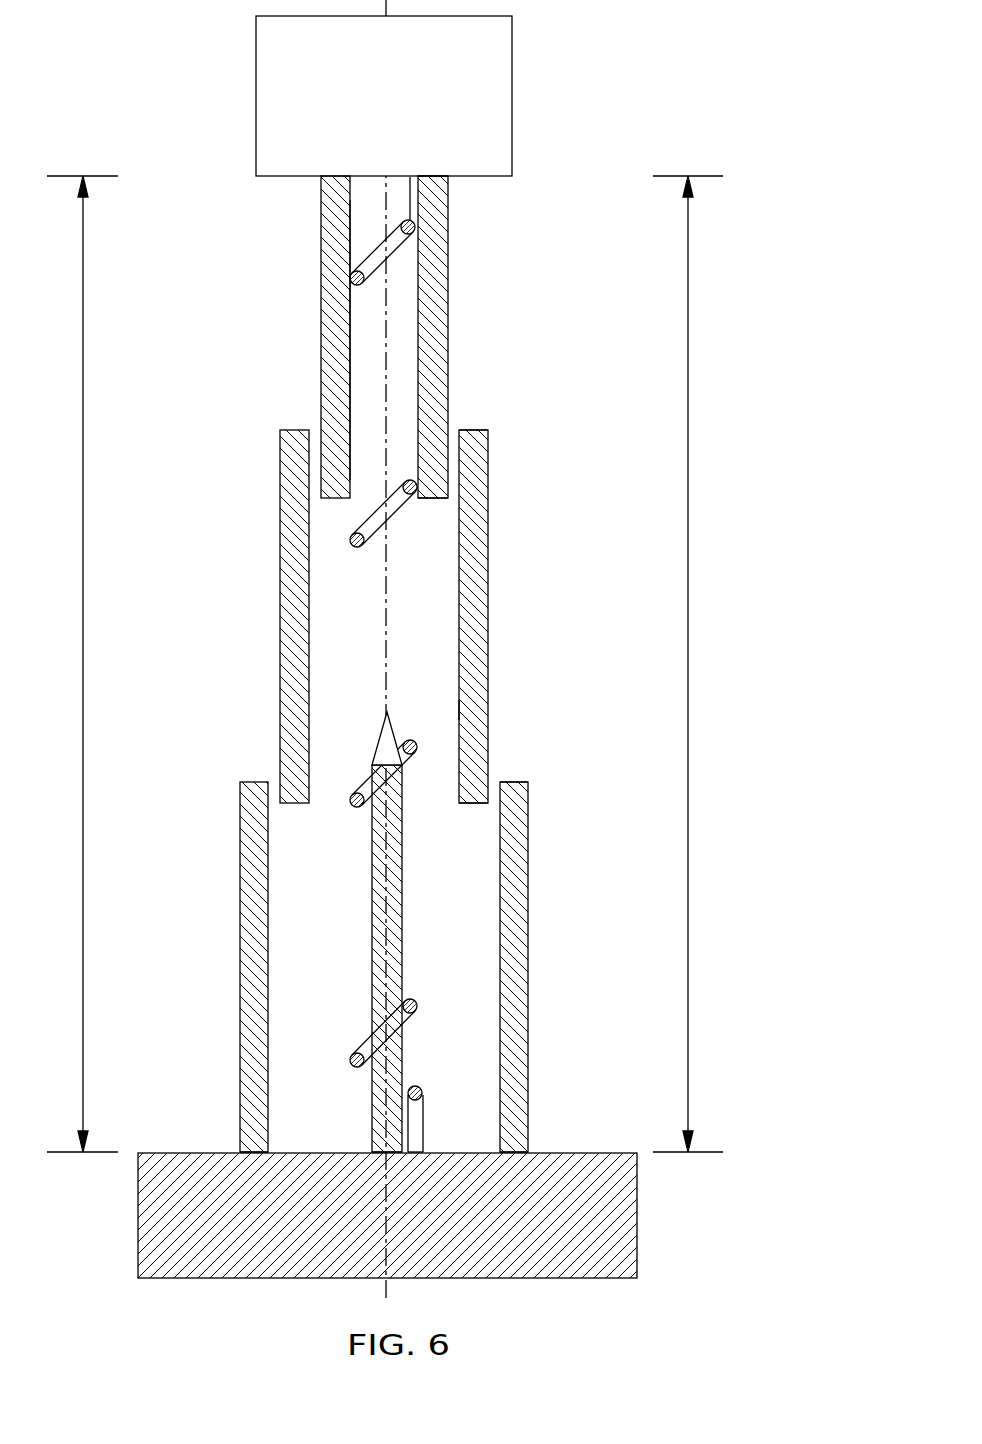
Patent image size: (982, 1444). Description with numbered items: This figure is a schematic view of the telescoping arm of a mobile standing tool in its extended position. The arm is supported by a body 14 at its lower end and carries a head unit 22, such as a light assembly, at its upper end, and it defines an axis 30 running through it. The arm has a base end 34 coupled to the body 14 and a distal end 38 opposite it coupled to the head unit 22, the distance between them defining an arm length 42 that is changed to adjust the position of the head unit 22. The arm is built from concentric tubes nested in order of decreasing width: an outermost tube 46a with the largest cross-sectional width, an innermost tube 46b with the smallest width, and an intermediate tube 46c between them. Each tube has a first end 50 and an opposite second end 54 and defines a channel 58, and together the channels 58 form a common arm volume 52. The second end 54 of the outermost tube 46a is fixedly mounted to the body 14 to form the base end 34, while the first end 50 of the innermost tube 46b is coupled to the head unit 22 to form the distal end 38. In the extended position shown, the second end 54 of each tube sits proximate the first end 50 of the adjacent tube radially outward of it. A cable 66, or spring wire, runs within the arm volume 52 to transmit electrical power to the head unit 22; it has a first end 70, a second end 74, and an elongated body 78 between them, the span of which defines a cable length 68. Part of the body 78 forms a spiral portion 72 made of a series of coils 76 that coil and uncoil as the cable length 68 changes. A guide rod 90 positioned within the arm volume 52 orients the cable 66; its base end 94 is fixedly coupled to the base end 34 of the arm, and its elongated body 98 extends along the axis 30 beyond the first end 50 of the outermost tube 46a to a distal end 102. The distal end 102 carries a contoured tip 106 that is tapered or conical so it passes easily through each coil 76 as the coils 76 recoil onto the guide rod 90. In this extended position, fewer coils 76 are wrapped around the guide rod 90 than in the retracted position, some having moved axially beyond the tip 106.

The body 14 is at (620, 1225).
The head unit 22 is at (512, 60).
The axis 30 is at (385, 113).
The base end 34 is at (513, 1147).
The distal end 38 is at (322, 190).
The arm length 42 is at (690, 258).
The outermost tube 46a is at (517, 928).
The innermost tube 46b is at (426, 449).
The intermediate tube 46c is at (477, 553).
The first end 50 is at (452, 181).
The common arm volume 52 is at (445, 694).
The second end 54 is at (433, 500).
The channel 58 is at (412, 362).
The cable 66 is at (417, 1102).
The cable length 68 is at (86, 616).
The first end 70 is at (420, 1150).
The spiral portion 72 is at (381, 526).
The second end 74 is at (410, 180).
The coils 76 is at (367, 269).
The elongated body 78 is at (377, 260).
The guide rod 90 is at (356, 914).
The base end 94 is at (372, 1148).
The elongated body 98 is at (372, 1013).
The distal end 102 is at (390, 735).
The contoured tip 106 is at (387, 712).